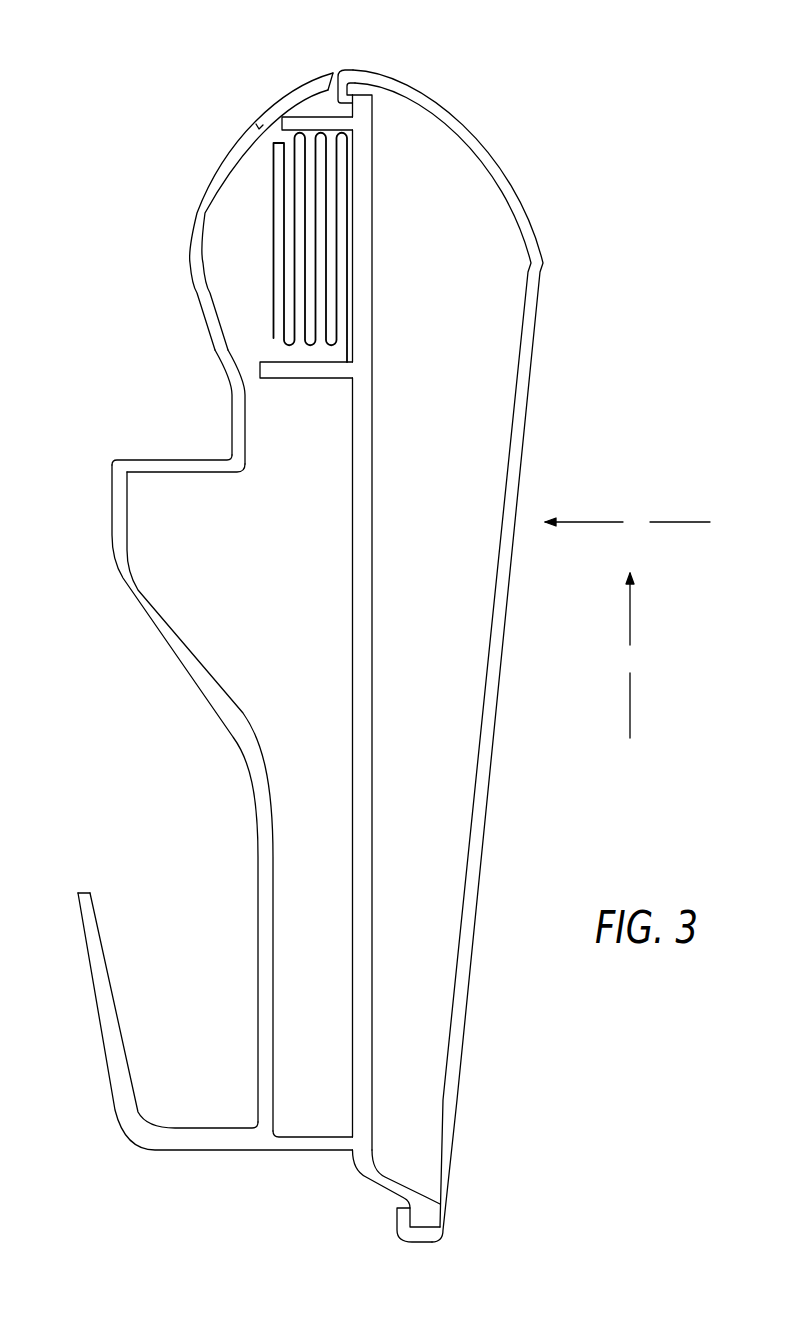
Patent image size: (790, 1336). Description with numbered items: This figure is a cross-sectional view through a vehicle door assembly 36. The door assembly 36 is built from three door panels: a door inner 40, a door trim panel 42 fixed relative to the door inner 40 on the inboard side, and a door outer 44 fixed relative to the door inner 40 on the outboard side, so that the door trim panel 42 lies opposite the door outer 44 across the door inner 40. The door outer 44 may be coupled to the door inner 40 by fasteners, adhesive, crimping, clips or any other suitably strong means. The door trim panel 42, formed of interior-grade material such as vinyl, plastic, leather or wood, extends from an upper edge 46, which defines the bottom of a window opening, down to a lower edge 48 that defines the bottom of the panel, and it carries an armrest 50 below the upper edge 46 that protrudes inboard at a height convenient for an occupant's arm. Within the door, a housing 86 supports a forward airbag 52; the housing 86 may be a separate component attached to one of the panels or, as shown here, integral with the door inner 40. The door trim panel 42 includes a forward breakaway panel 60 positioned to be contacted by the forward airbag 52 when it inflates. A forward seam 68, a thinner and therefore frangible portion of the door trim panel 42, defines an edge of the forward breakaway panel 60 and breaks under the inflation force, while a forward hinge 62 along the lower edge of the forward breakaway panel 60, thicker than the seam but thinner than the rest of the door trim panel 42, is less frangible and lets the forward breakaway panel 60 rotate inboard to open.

The door assembly 36 is at (570, 93).
The door inner 40 is at (372, 432).
The door trim panel 42 is at (110, 507).
The door outer 44 is at (528, 397).
The upper edge 46 is at (319, 76).
The lower edge 48 is at (200, 1152).
The armrest 50 is at (150, 458).
The forward airbag 52 is at (271, 175).
The forward breakaway panel 60 is at (197, 197).
The forward hinge 62 is at (225, 348).
The forward seam 68 is at (258, 121).
The housing 86 is at (305, 378).